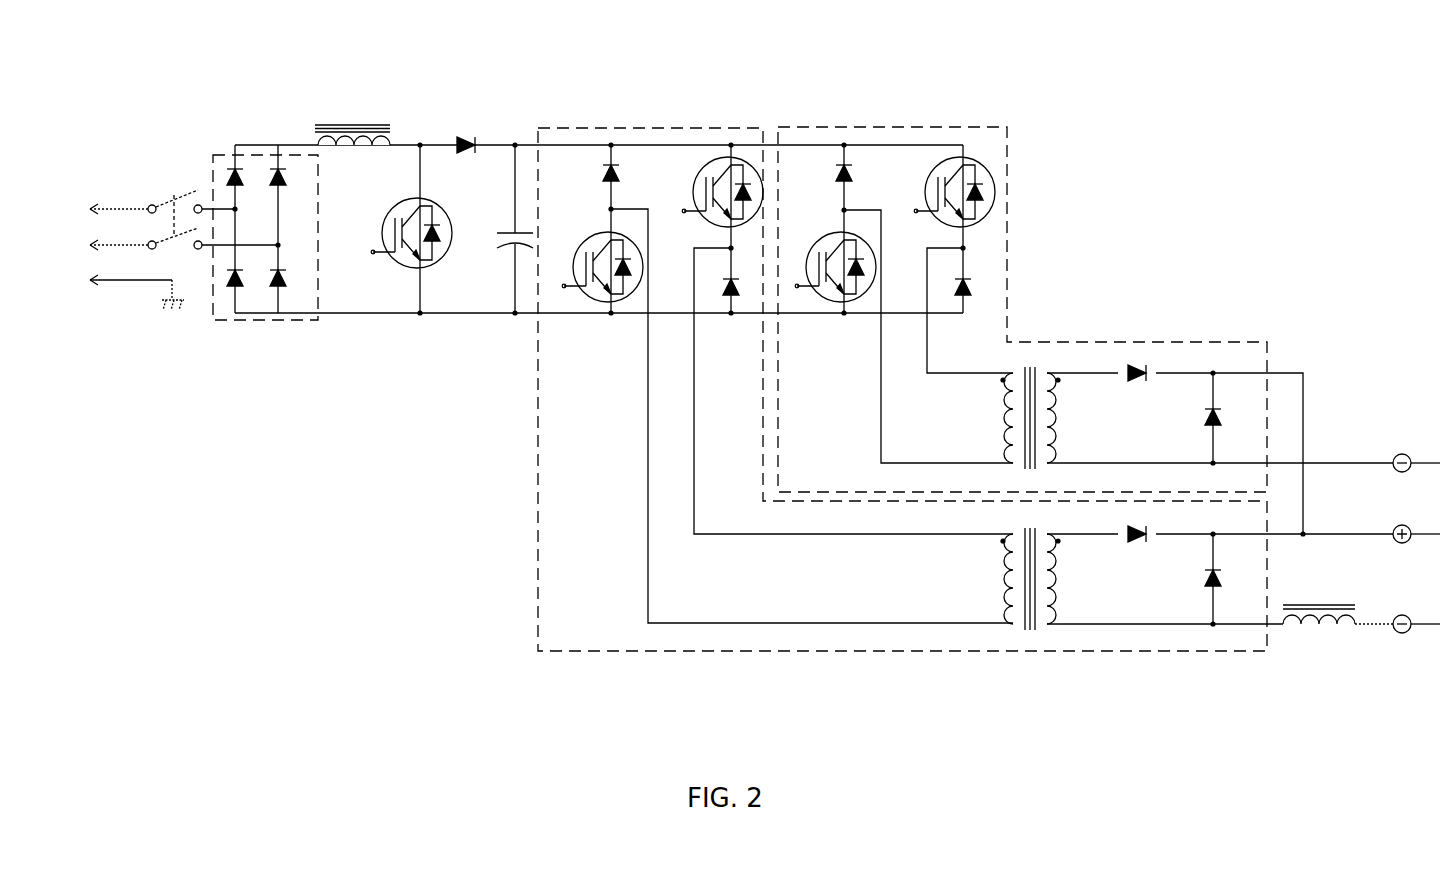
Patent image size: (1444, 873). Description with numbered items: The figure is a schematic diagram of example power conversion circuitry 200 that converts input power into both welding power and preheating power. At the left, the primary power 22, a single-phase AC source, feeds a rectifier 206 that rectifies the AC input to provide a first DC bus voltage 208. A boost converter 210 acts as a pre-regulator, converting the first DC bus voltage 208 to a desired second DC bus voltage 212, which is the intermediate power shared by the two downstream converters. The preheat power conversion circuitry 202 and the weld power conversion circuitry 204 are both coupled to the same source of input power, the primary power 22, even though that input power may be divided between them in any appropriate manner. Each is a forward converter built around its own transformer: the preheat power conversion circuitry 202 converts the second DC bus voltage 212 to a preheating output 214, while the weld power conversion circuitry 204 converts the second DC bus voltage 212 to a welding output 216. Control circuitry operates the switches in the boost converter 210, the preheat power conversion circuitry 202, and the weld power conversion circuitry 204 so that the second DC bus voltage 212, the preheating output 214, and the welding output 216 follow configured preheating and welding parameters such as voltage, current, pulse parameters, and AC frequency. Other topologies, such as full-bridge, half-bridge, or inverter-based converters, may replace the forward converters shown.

The power conversion circuitry 200 is at (165, 52).
The primary power 22 is at (110, 167).
The rectifier 206 is at (226, 155).
The first DC bus voltage 208 is at (278, 144).
The boost converter 210 is at (330, 107).
The second DC bus voltage 212 is at (490, 143).
The weld power conversion circuitry 204 is at (571, 129).
The preheat power conversion circuitry 202 is at (814, 129).
The preheating output 214 is at (1412, 486).
The welding output 216 is at (1361, 587).